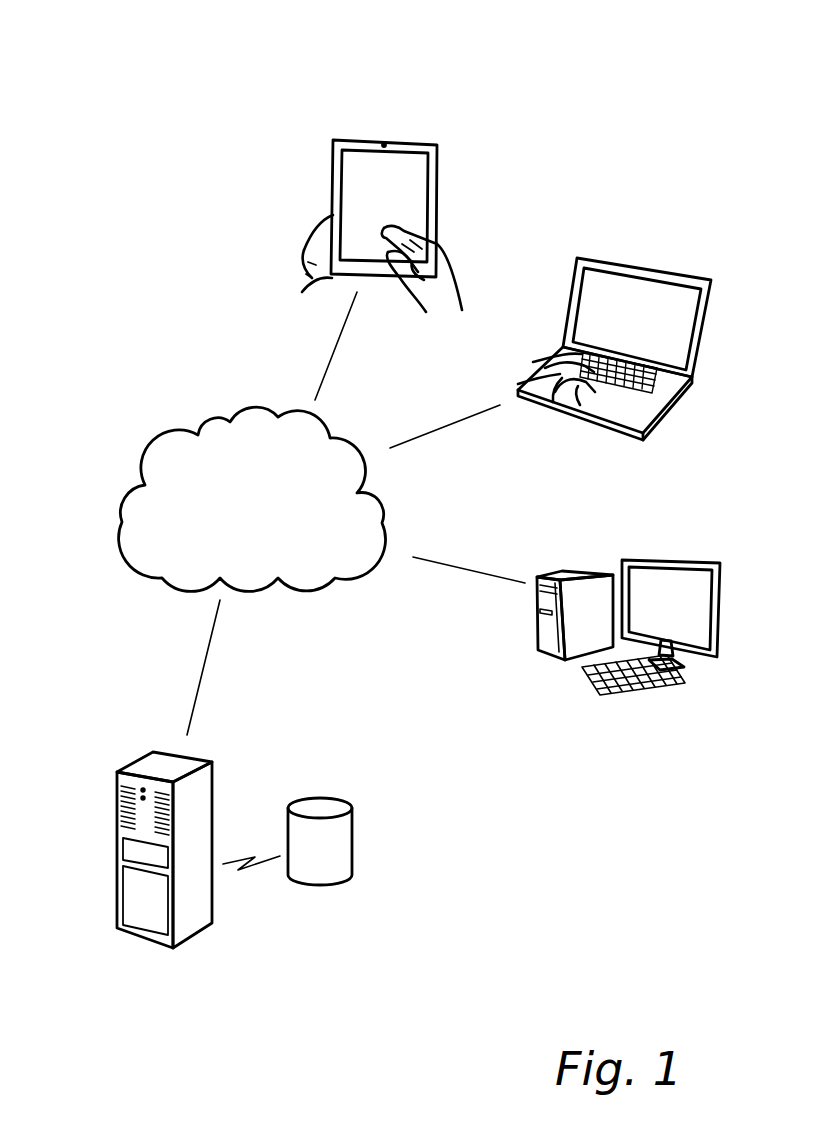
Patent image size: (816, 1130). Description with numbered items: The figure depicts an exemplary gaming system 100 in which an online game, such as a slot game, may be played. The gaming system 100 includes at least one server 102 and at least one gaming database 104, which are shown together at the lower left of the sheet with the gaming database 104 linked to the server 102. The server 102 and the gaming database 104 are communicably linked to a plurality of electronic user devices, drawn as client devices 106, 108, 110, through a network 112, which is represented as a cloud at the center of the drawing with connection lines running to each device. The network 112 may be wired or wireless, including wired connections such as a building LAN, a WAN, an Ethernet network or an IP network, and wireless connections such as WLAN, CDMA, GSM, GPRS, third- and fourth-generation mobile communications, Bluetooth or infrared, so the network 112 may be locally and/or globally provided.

The gaming system 100 is at (103, 122).
The server 102 is at (193, 792).
The gaming database 104 is at (328, 884).
The client device 106 is at (439, 197).
The client device 108 is at (639, 268).
The client device 110 is at (675, 560).
The network 112 is at (177, 427).